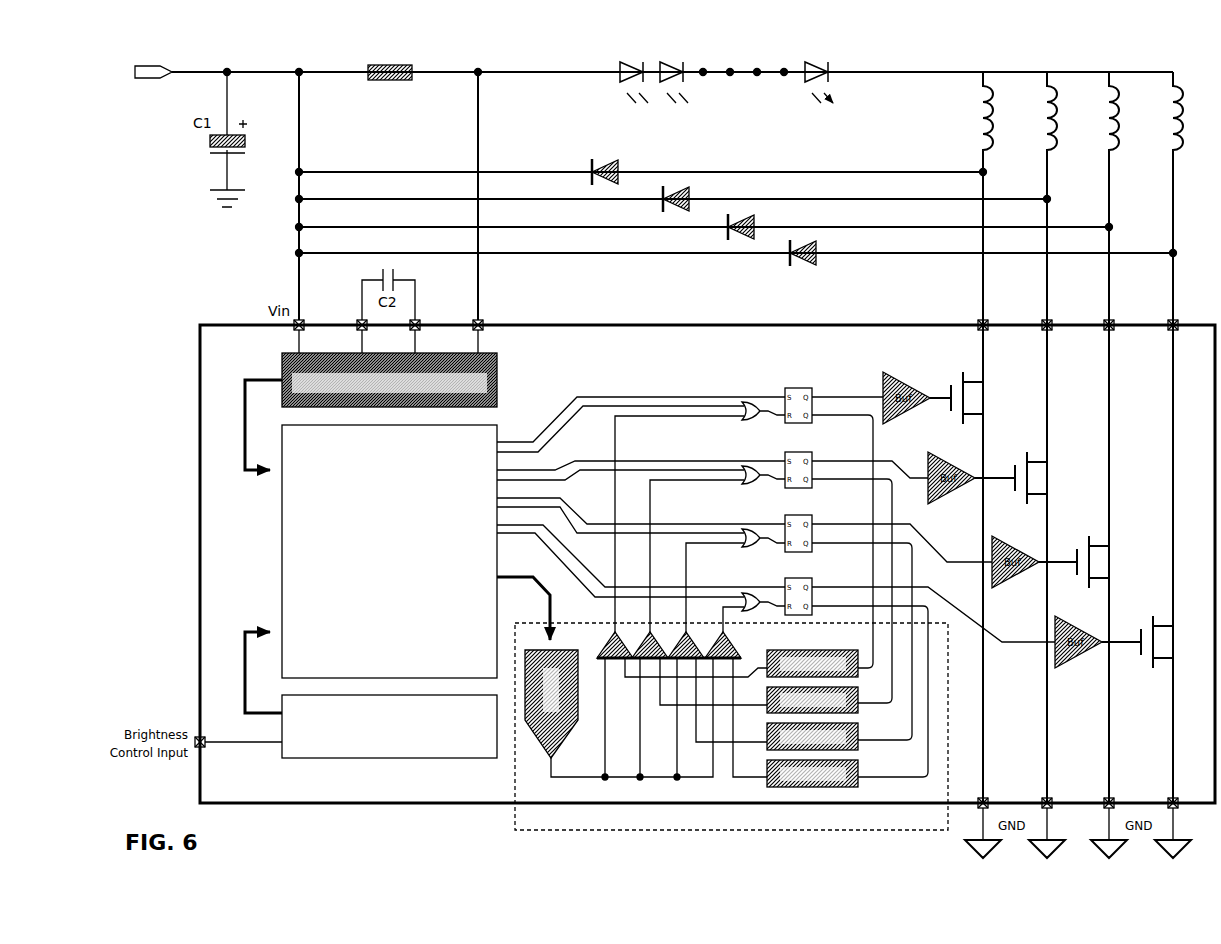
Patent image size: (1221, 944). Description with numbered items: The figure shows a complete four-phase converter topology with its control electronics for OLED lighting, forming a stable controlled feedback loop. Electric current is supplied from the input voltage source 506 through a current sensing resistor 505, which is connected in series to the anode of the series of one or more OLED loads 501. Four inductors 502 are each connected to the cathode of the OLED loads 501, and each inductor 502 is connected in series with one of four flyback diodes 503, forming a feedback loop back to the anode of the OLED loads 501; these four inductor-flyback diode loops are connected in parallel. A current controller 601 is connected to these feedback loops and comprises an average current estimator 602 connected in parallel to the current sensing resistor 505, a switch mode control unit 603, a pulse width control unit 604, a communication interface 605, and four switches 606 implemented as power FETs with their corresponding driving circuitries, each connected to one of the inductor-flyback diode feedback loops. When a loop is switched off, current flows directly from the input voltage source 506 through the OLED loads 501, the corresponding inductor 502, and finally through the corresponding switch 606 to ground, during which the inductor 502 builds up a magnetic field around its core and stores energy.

The OLED loads 501 is at (630, 87).
The inductors 502 is at (1165, 140).
The flyback diodes 503 is at (750, 262).
The current sensing resistor R1 505 is at (375, 85).
The Vin 506 is at (136, 87).
The current controller 601 is at (707, 564).
The average current estimator 602 is at (501, 365).
The switch mode control unit 603 is at (389, 551).
The pulse width control unit 604 is at (731, 728).
The communication interface 605 is at (389, 726).
The switches 606 is at (1163, 605).